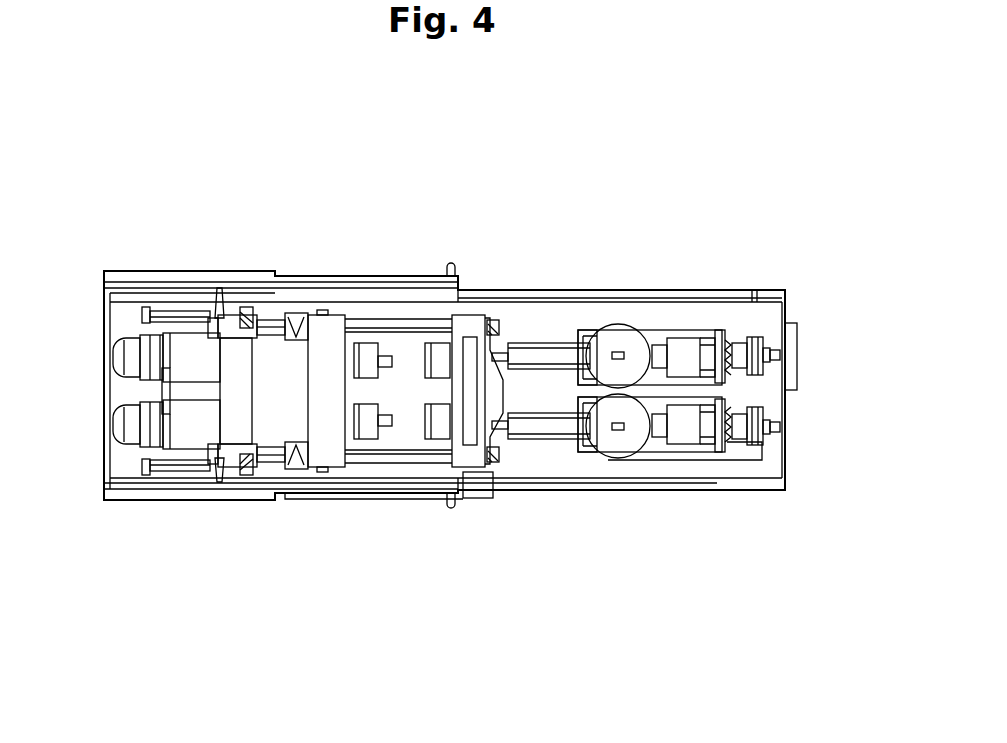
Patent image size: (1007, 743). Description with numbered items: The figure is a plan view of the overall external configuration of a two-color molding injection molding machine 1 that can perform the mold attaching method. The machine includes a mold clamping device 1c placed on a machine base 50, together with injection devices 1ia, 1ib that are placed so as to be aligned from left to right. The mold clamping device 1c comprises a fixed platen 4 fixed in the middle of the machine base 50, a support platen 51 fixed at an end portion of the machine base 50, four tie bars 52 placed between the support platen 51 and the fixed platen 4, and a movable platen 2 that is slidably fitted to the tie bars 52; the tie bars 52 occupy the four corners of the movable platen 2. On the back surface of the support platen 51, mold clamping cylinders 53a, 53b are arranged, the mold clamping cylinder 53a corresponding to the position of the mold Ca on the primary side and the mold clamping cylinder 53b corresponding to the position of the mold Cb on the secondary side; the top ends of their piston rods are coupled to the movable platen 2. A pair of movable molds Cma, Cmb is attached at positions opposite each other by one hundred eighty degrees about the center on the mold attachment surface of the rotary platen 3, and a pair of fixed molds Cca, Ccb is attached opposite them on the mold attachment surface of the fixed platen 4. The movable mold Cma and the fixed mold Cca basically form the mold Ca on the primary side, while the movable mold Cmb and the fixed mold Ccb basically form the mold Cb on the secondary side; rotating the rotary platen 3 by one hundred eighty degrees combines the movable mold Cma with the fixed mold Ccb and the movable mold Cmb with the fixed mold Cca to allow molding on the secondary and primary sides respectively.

The two-color molding injection molding machine 1 is at (573, 230).
The machine base 50 is at (625, 490).
The mold clamping device 1c is at (302, 496).
The mold clamping cylinder 53a is at (182, 306).
The mold clamping cylinder 53b is at (180, 460).
The support platen 51 is at (228, 300).
The tie bars 52 is at (268, 303).
The movable platen 2 is at (315, 308).
The rotary platen 3 is at (317, 473).
The mold on the primary side Ca is at (391, 316).
The mold on the secondary side Cb is at (390, 466).
The movable mold Cma is at (367, 341).
The movable mold Cmb is at (370, 442).
The fixed mold Cca is at (437, 341).
The fixed mold Ccb is at (440, 442).
The fixed platen 4 is at (477, 314).
The injection device 1ia is at (668, 316).
The injection device 1ib is at (670, 466).